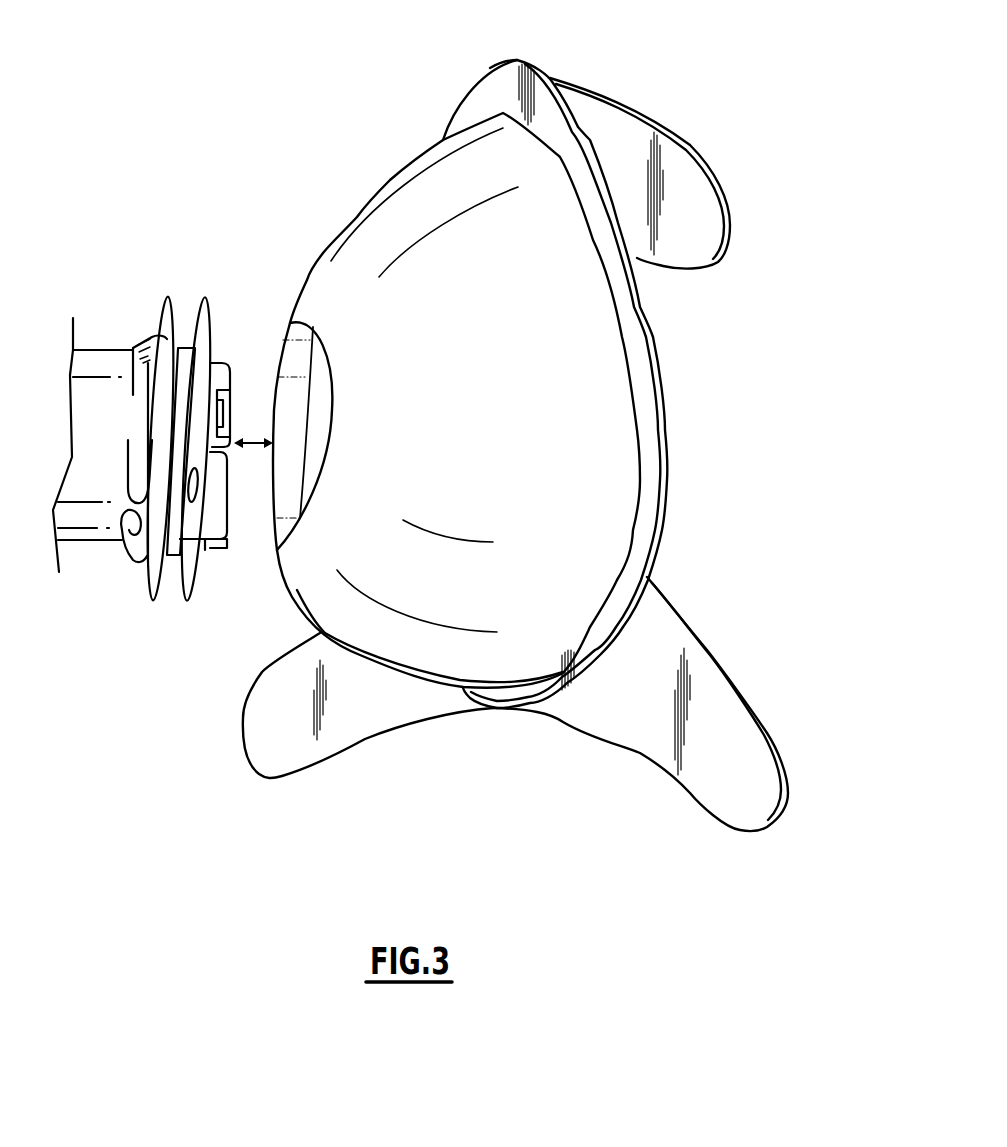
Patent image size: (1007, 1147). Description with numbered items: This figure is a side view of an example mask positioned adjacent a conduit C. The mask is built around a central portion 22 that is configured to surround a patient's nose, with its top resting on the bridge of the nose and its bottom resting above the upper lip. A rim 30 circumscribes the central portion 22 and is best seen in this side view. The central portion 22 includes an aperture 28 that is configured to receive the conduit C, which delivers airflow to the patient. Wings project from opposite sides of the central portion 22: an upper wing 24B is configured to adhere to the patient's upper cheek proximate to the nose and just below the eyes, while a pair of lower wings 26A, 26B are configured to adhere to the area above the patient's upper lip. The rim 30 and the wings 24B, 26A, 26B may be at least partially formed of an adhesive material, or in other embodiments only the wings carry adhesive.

The central portion 22 is at (462, 93).
The rim 30 is at (507, 82).
The aperture 28 is at (313, 390).
The upper wing 24B is at (635, 157).
The lower wing 26A is at (297, 723).
The lower wing 26B is at (707, 712).
The conduit C is at (102, 362).